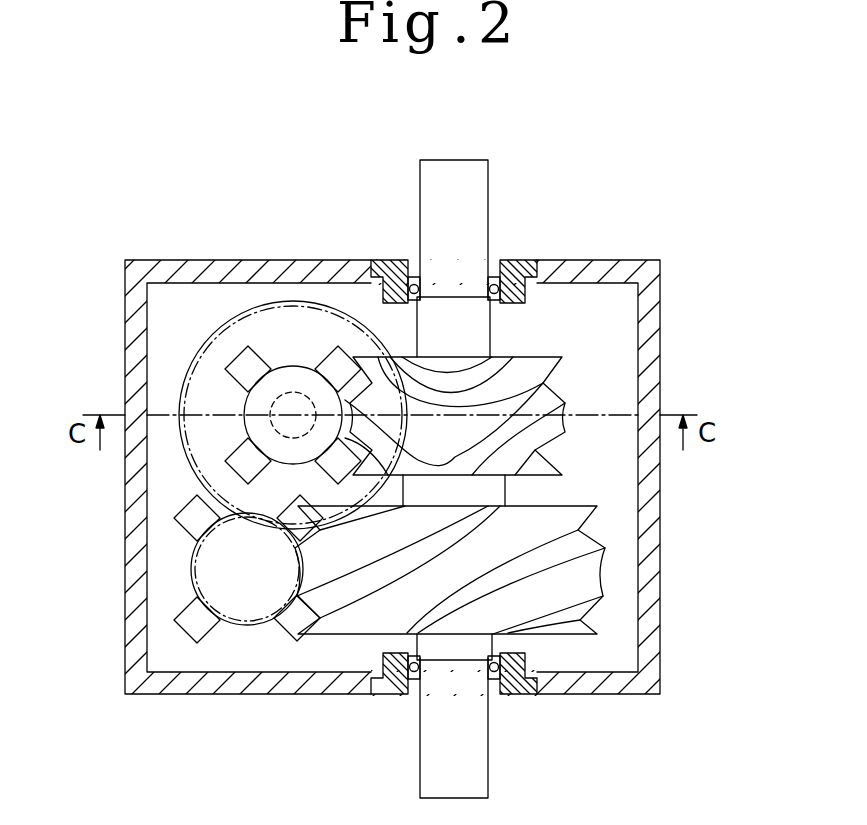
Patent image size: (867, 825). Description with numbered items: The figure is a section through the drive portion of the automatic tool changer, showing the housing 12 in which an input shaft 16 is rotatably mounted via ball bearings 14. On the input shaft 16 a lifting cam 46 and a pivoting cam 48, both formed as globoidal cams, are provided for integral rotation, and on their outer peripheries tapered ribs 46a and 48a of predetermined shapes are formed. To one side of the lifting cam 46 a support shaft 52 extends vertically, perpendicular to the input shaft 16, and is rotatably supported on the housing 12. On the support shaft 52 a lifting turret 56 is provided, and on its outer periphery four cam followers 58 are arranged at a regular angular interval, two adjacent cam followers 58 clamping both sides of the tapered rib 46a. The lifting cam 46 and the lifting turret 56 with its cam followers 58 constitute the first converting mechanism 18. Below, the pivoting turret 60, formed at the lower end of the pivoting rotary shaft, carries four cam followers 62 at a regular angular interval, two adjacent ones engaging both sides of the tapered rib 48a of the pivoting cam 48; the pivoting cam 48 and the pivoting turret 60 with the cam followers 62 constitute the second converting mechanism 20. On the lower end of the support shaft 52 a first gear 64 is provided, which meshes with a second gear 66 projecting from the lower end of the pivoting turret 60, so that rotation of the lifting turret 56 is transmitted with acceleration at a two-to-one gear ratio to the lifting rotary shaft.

The housing 12 is at (162, 690).
The ball bearings 14 is at (413, 277).
The input shaft 16 is at (468, 267).
The first converting mechanism 18 is at (232, 363).
The second converting mechanism 20 is at (206, 630).
The lifting cam 46 is at (543, 351).
The tapered rib 46a is at (500, 403).
The pivoting cam 48 is at (518, 561).
The tapered rib 48a is at (458, 512).
The support shaft 52 is at (288, 395).
The lifting turret 56 is at (243, 372).
The cam followers 58 is at (245, 368).
The pivoting turret 60 is at (213, 565).
The cam followers 62 is at (186, 514).
The first gear 64 is at (200, 405).
The second gear 66 is at (183, 580).